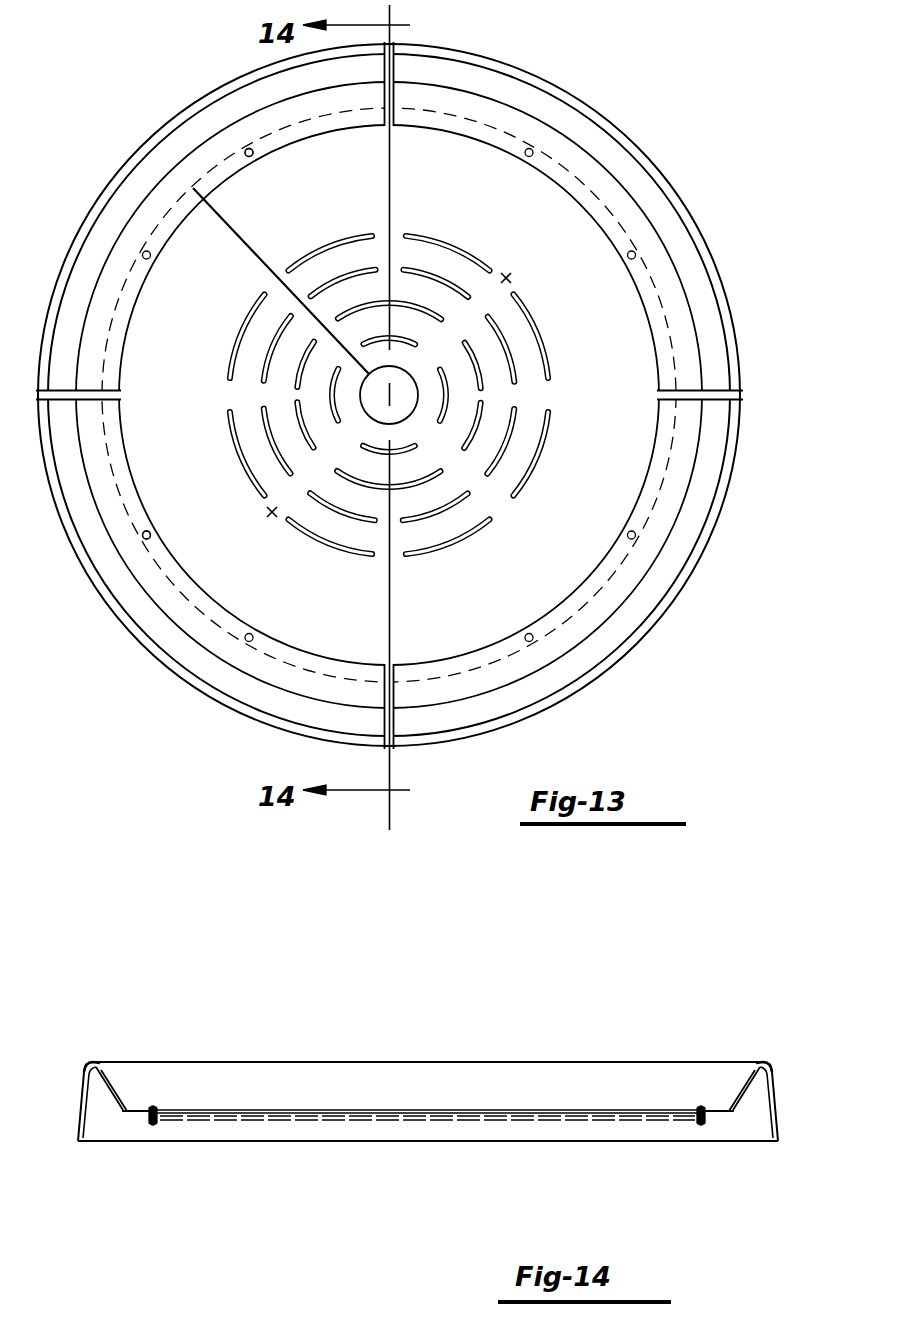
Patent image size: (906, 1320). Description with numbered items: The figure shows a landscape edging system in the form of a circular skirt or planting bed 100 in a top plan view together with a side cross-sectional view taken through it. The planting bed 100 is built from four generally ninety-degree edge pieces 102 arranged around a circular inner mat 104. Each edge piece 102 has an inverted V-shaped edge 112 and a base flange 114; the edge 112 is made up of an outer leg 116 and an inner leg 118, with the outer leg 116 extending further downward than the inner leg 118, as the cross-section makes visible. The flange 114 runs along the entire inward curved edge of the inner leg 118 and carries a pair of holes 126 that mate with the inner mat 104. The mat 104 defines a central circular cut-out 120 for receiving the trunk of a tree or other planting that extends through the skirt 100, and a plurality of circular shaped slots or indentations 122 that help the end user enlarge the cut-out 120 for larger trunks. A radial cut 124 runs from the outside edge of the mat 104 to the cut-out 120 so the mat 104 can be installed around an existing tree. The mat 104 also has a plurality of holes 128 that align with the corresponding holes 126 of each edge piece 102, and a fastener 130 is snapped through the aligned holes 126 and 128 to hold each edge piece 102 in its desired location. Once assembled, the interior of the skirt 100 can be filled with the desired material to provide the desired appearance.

In FIG. 13, the circular skirt or planting bed 100 is at (708, 45).
In FIG. 13, the edge piece 102 is at (193, 132).
In FIG. 13, the circular inner mat 104 is at (460, 197).
In FIG. 14, the circular inner mat 104 is at (240, 1120).
In FIG. 14, the inverted V-shaped edge 112 is at (94, 1062).
In FIG. 13, the base flange 114 is at (578, 609).
In FIG. 14, the base flange 114 is at (140, 1108).
In FIG. 14, the outer leg 116 is at (772, 1100).
In FIG. 14, the inner leg 118 is at (742, 1108).
In FIG. 13, the circular cut-out 120 is at (410, 416).
In FIG. 13, the circular shaped slots or indentations 122 is at (547, 358).
In FIG. 13, the radial cut 124 is at (264, 264).
In FIG. 13, the holes 126 is at (253, 158).
In FIG. 14, the holes 126 is at (158, 1108).
In FIG. 13, the holes 128 is at (152, 534).
In FIG. 14, the holes 128 is at (147, 1125).
In FIG. 13, the fastener 130 is at (255, 152).
In FIG. 14, the fastener 130 is at (157, 1125).